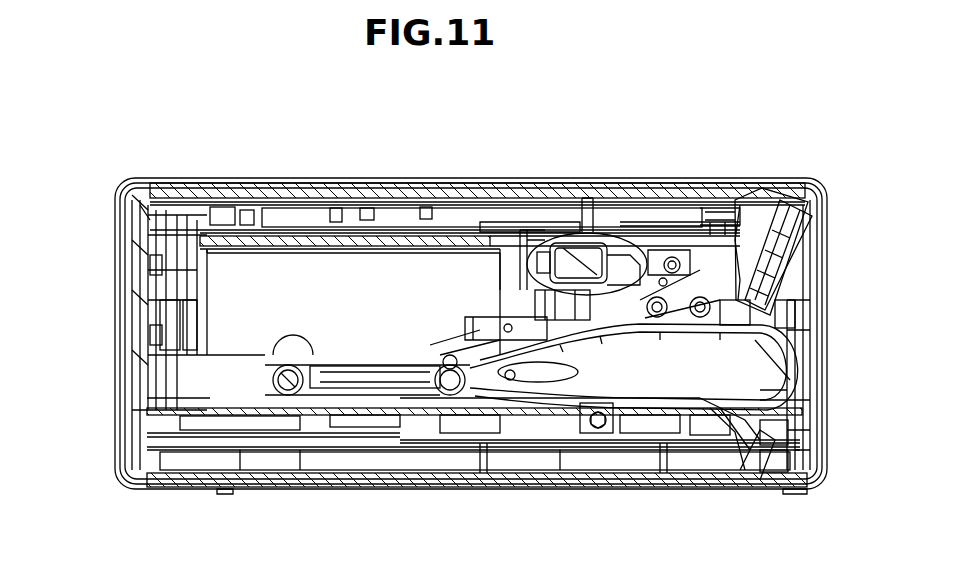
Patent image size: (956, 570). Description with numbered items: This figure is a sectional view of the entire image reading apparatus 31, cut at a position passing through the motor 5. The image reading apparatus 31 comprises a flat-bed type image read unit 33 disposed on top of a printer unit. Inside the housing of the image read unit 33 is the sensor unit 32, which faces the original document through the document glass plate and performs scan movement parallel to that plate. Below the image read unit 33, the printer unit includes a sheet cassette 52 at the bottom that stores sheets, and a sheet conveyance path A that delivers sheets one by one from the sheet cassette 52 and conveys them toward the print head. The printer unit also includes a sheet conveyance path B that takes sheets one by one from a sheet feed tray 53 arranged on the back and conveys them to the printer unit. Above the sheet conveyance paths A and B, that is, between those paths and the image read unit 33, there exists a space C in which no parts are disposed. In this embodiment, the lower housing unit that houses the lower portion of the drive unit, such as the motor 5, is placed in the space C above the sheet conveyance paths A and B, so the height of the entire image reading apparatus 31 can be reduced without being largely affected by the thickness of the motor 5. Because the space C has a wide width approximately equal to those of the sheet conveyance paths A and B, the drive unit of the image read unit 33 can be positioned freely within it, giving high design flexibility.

The image reading apparatus 31 is at (112, 349).
The image read unit 33 is at (280, 201).
The sensor unit 32 is at (447, 219).
The space C is at (515, 258).
The motor 5 is at (590, 252).
The sheet conveyance path B is at (654, 306).
The sheet feed tray 53 is at (760, 208).
The sheet conveyance path A is at (747, 417).
The sheet cassette 52 is at (517, 463).